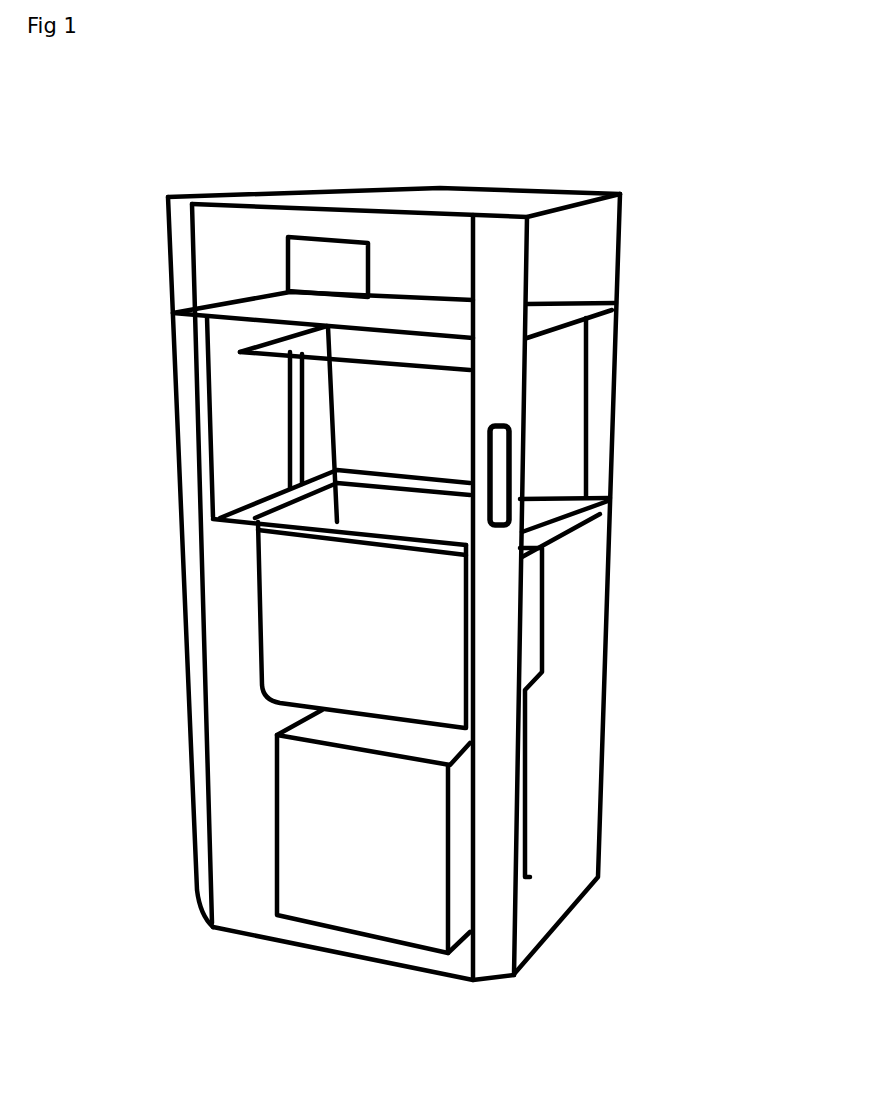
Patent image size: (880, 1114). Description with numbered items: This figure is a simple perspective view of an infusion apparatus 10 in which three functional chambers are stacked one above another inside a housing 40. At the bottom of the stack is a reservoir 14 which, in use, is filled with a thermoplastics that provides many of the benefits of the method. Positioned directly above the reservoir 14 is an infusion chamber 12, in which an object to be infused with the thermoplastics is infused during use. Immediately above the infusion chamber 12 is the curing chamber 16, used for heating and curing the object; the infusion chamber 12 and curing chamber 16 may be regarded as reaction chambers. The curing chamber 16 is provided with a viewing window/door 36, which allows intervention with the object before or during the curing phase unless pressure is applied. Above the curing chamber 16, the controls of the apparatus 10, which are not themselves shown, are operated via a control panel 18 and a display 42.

The infusion apparatus 10 is at (460, 185).
The display 42 is at (322, 270).
The curing chamber 16 is at (543, 422).
The control panel 18 is at (513, 505).
The reservoir 14 is at (530, 758).
The viewing window/door 36 is at (215, 518).
The infusion chamber 12 is at (277, 672).
The housing 40 is at (543, 937).